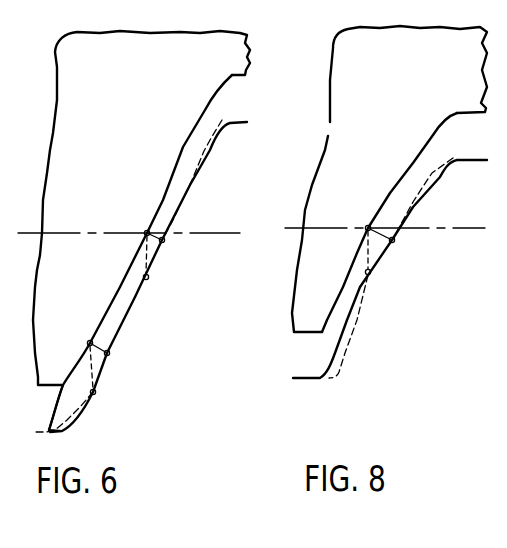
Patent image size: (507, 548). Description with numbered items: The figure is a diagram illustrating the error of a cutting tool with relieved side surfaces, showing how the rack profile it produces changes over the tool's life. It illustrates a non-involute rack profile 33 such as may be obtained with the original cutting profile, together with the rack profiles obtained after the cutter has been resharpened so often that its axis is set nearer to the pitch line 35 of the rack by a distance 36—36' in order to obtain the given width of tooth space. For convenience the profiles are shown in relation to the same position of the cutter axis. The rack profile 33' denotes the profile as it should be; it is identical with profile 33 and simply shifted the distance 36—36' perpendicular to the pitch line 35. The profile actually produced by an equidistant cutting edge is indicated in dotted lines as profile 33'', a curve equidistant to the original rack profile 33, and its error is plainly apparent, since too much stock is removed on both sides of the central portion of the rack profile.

In FIG. 6, the rack profile 33 is at (148, 253).
In FIG. 6, the rack profile as it should be 33' is at (129, 276).
In FIG. 6, the profile produced by an equidistant cutting edge 33'' is at (93, 417).
In FIG. 6, the pitch line 35 is at (47, 233).
In FIG. 6, the point on original profile 36 is at (125, 278).
In FIG. 8, the point on original profile 36 is at (368, 221).
In FIG. 6, the shifted point on profile 36' is at (142, 315).
In FIG. 8, the shifted point on profile 36' is at (390, 263).